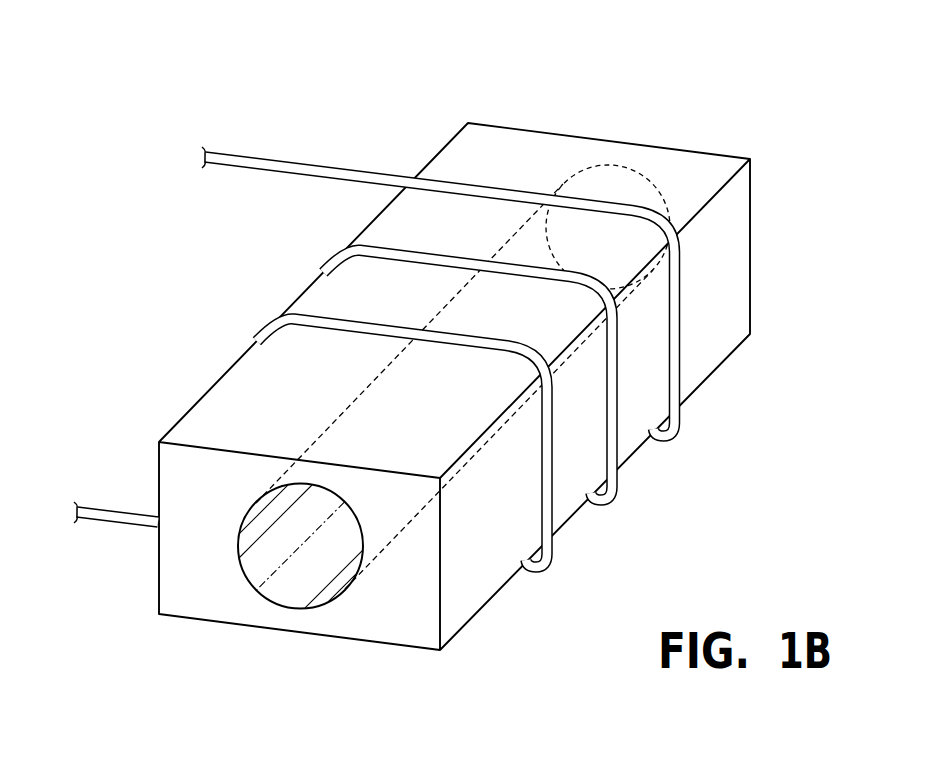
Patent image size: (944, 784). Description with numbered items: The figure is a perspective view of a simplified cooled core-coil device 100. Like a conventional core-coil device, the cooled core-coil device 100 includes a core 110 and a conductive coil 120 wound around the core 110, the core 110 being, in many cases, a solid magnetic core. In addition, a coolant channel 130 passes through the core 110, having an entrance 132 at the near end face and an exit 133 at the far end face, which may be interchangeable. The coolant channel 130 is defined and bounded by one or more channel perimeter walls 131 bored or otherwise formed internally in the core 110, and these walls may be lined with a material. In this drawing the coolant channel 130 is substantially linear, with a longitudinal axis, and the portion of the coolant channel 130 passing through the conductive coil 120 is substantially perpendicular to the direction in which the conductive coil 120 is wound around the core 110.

The cooled core-coil device 100 is at (412, 371).
The core 110 is at (187, 403).
The conductive coil 120 is at (321, 157).
The coolant channel 130 is at (262, 563).
The channel perimeter walls 131 is at (297, 594).
The entrance 132 is at (348, 600).
The exit 133 is at (668, 188).